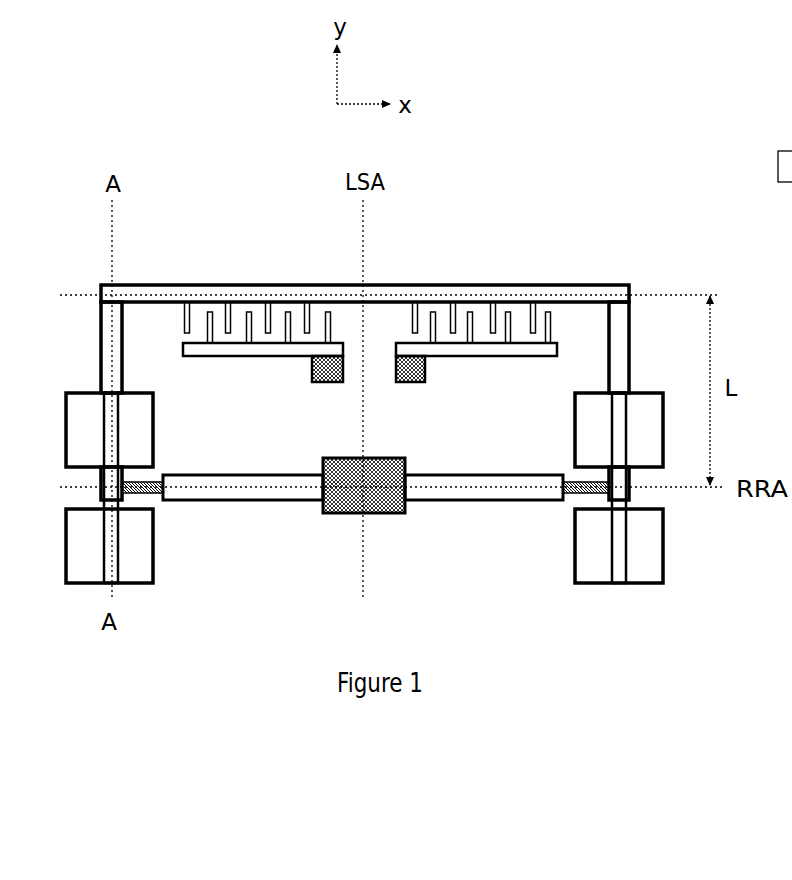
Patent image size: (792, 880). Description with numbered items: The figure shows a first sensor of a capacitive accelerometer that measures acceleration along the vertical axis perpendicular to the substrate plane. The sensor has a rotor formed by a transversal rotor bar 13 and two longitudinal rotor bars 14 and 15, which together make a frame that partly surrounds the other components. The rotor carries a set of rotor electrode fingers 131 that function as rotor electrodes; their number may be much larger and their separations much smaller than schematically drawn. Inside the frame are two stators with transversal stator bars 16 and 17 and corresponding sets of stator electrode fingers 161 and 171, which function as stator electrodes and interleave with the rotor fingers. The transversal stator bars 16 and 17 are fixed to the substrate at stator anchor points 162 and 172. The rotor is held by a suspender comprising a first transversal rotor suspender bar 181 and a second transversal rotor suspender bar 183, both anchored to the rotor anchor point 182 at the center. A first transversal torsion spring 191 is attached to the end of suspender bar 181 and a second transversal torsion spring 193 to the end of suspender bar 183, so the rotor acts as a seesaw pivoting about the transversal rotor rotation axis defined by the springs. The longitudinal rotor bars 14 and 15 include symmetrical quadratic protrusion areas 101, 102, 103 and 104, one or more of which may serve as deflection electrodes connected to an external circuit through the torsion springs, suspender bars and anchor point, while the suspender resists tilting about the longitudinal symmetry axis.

The transversal rotor bar 13 is at (578, 299).
The longitudinal rotor bar 14 is at (101, 328).
The longitudinal rotor bar 15 is at (617, 366).
The transversal stator bar 16 is at (467, 342).
The transversal stator bar 17 is at (237, 341).
The rotor electrode fingers 131 is at (187, 320).
The stator electrode fingers 161 is at (550, 322).
The stator electrode fingers 171 is at (328, 322).
The stator anchor point 162 is at (425, 372).
The stator anchor point 172 is at (312, 370).
The first transversal rotor suspender bar 181 is at (478, 484).
The rotor anchor point 182 is at (350, 488).
The second transversal rotor suspender bar 183 is at (255, 486).
The first transversal torsion spring 191 is at (580, 487).
The second transversal torsion spring 193 is at (148, 485).
The protrusion area 101 is at (91, 427).
The protrusion area 102 is at (85, 547).
The protrusion area 103 is at (623, 437).
The protrusion area 104 is at (624, 563).